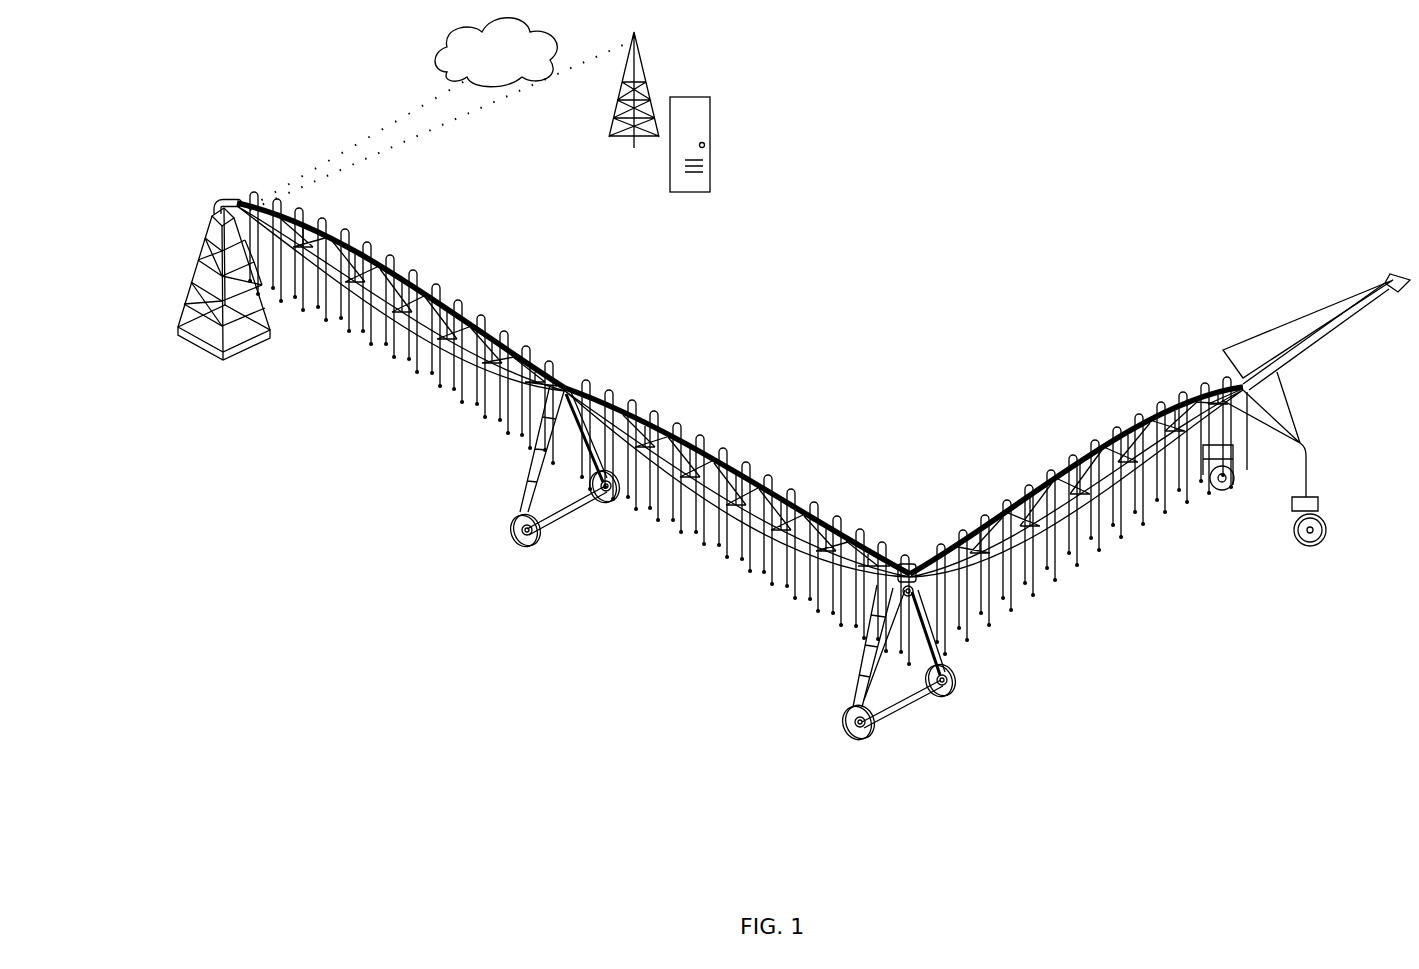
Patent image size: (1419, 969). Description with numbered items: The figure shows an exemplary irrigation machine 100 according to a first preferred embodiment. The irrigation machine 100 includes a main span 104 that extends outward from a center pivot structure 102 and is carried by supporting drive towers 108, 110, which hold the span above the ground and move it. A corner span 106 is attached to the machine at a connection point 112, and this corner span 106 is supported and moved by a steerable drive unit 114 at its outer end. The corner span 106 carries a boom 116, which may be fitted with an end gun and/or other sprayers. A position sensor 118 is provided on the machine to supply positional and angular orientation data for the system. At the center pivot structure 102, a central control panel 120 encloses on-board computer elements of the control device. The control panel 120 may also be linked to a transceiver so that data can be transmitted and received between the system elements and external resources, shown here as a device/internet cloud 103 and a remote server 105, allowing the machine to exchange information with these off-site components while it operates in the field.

The irrigation machine 100 is at (813, 240).
The center pivot structure 102 is at (210, 217).
The device/internet cloud 103 is at (473, 63).
The main span 104 is at (636, 400).
The remote server 105 is at (643, 83).
The corner span 106 is at (1013, 483).
The drive tower 108 is at (522, 497).
The drive tower 110 is at (867, 655).
The connection point 112 is at (910, 597).
The steerable drive unit 114 is at (1305, 438).
The boom 116 is at (1317, 335).
The position sensor 118 is at (912, 572).
The central control panel 120 is at (200, 295).